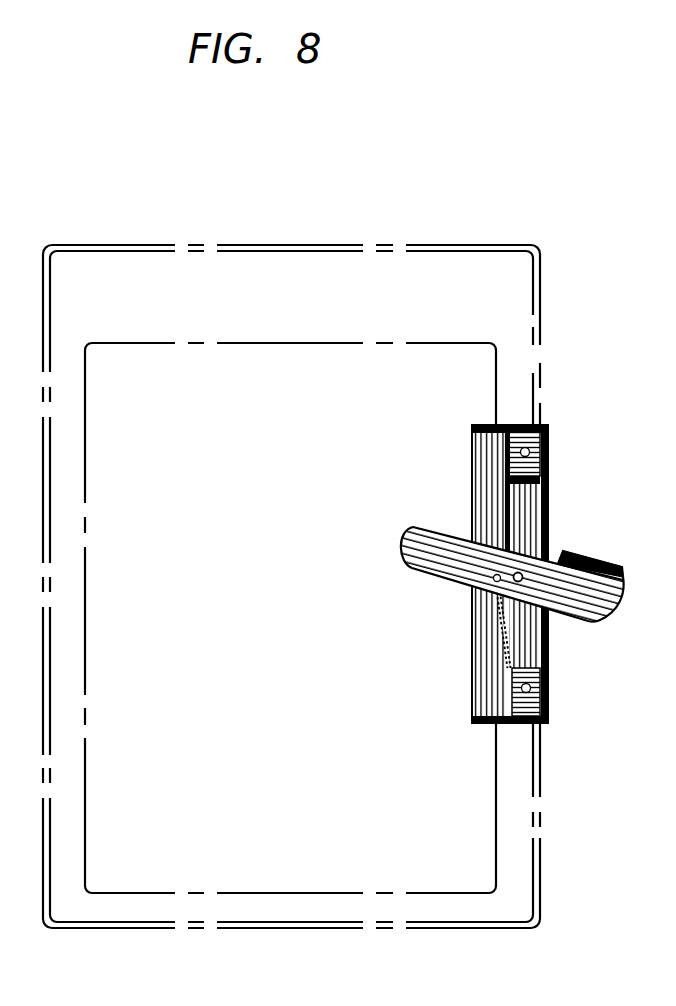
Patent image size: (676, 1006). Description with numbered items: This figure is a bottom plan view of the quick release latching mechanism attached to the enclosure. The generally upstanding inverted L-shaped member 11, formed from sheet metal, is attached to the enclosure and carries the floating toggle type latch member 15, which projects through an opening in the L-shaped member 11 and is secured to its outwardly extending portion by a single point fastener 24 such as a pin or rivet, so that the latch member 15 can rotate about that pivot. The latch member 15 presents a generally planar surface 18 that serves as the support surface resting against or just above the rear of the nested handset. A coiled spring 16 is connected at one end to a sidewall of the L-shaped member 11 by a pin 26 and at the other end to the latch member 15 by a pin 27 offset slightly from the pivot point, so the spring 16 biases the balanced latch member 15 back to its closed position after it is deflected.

The inverted L-shaped member 11 is at (548, 470).
The floating toggle type latch member 15 is at (548, 548).
The coiled spring 16 is at (497, 621).
The planar surface 18 is at (430, 527).
The single point fastener 24 is at (522, 581).
The pin 26 is at (508, 690).
The pin 27 is at (487, 566).